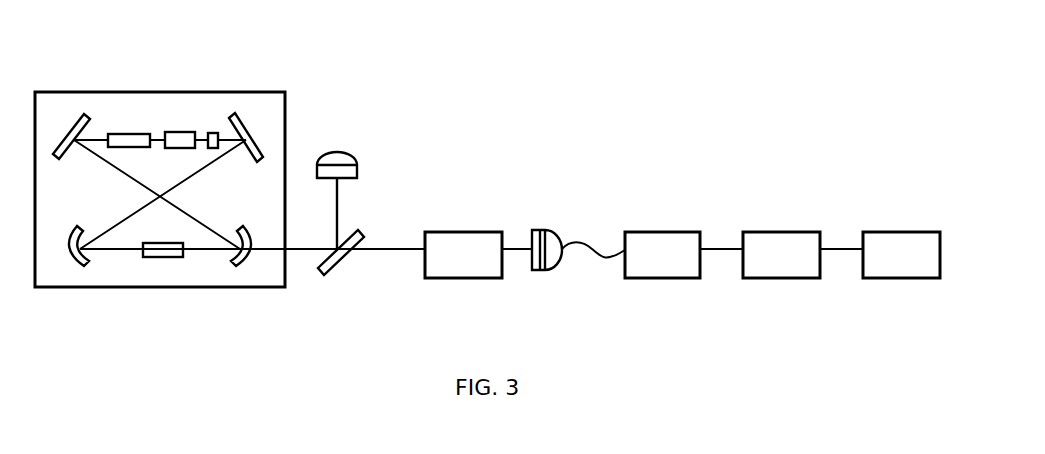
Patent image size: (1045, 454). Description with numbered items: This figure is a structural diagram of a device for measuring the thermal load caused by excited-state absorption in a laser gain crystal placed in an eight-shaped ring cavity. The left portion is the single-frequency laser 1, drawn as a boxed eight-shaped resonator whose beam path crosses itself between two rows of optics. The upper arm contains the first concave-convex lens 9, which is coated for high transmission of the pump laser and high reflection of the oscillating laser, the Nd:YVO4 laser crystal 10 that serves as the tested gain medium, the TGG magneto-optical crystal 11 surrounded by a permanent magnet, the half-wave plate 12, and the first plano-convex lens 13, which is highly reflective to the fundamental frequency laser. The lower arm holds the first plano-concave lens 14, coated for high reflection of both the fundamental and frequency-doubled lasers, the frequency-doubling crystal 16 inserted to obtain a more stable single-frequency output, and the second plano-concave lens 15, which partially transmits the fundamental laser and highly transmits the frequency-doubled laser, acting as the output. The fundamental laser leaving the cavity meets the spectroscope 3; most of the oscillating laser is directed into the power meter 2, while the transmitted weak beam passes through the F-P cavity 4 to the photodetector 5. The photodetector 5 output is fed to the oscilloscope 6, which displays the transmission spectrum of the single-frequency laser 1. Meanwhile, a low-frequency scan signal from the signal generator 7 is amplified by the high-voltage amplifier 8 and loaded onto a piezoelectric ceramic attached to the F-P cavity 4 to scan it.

The single-frequency laser 1 is at (172, 92).
The power meter 2 is at (330, 150).
The spectroscope 3 is at (327, 278).
The F-P cavity 4 is at (460, 278).
The photodetector 5 is at (547, 228).
The oscilloscope 6 is at (660, 278).
The signal generator 7 is at (782, 278).
The high-voltage amplifier 8 is at (900, 278).
The first concave-convex lens 9 is at (71, 136).
The Nd:YVO4 laser crystal 10 is at (129, 130).
The TGG magneto-optical crystal 11 is at (180, 131).
The half-wave plate 12 is at (213, 130).
The first plano-convex lens 13 is at (249, 137).
The first plano-concave lens 14 is at (69, 250).
The second plano-concave lens 15 is at (247, 251).
The frequency-doubling crystal 16 is at (163, 259).